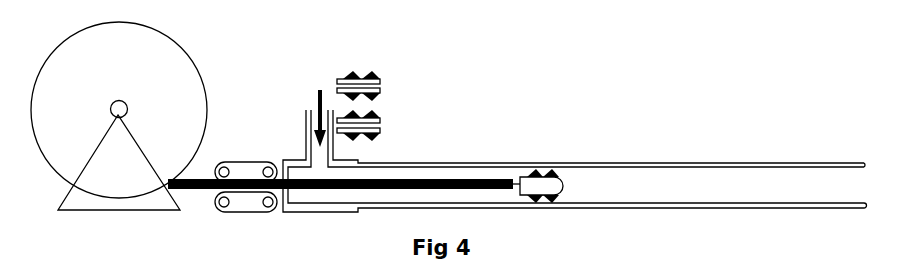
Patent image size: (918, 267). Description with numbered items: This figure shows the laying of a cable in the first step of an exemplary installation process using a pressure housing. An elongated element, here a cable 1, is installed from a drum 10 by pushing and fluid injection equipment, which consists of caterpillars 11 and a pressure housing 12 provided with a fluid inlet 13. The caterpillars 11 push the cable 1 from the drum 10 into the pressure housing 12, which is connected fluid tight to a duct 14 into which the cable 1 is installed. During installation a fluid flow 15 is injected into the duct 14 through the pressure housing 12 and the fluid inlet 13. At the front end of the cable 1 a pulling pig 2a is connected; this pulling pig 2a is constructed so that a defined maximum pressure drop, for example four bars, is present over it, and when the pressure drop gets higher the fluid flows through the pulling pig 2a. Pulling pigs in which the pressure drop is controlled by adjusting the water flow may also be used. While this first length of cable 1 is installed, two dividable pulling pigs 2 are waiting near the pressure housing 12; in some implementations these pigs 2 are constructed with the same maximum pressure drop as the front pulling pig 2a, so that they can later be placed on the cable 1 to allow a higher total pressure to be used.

The cable 1 is at (432, 181).
The dividable pulling pig 2 is at (380, 83).
The pulling pig 2a is at (617, 146).
The drum 10 is at (168, 49).
The caterpillars 11 is at (247, 160).
The pressure housing 12 is at (296, 158).
The fluid inlet 13 is at (308, 108).
The duct 14 is at (463, 163).
The fluid flow 15 is at (324, 88).